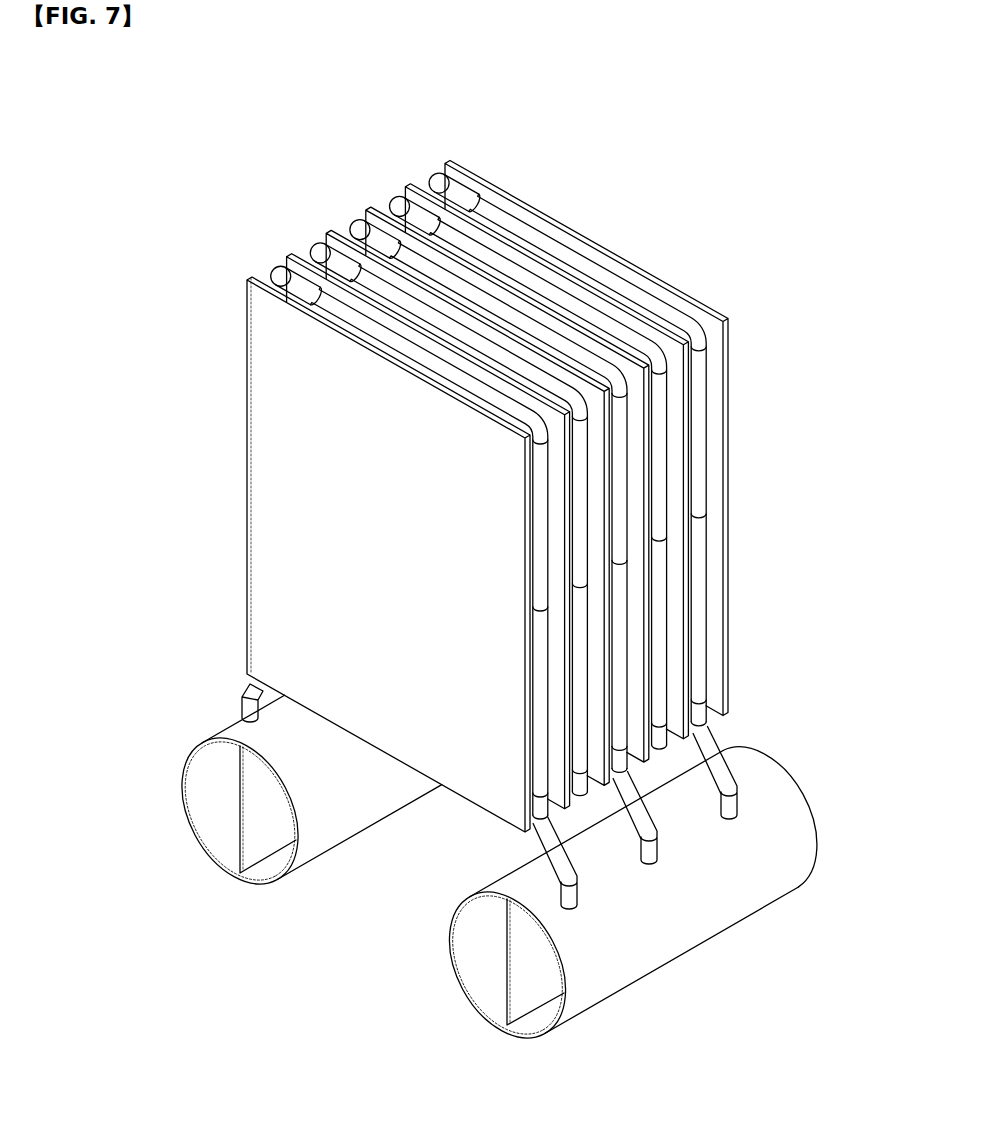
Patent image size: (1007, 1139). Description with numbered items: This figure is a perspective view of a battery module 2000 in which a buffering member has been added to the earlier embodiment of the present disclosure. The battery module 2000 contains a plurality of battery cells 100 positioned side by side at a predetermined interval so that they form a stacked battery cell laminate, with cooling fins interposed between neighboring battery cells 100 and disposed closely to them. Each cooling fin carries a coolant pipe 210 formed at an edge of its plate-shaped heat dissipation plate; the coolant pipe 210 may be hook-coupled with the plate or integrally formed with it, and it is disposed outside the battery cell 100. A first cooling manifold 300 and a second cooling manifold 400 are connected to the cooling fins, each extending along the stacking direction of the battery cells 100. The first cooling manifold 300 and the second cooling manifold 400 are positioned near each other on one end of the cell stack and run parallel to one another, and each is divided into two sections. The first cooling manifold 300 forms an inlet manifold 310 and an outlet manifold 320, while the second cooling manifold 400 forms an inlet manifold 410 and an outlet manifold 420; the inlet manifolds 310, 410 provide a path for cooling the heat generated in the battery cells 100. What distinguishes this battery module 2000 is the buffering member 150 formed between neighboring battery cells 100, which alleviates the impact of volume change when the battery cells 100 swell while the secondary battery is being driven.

The battery module 2000 is at (277, 183).
The battery cell 100 is at (372, 285).
The buffering member 150 is at (277, 440).
The coolant pipe 210 is at (314, 254).
The first cooling manifold 300 is at (303, 878).
The inlet manifold 310 is at (208, 797).
The outlet manifold 320 is at (267, 832).
The second cooling manifold 400 is at (628, 997).
The inlet manifold 410 is at (483, 953).
The outlet manifold 420 is at (537, 977).